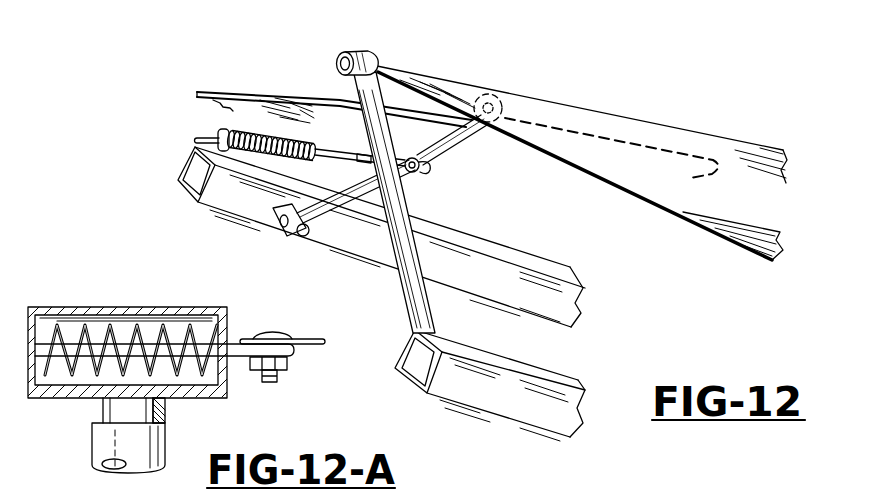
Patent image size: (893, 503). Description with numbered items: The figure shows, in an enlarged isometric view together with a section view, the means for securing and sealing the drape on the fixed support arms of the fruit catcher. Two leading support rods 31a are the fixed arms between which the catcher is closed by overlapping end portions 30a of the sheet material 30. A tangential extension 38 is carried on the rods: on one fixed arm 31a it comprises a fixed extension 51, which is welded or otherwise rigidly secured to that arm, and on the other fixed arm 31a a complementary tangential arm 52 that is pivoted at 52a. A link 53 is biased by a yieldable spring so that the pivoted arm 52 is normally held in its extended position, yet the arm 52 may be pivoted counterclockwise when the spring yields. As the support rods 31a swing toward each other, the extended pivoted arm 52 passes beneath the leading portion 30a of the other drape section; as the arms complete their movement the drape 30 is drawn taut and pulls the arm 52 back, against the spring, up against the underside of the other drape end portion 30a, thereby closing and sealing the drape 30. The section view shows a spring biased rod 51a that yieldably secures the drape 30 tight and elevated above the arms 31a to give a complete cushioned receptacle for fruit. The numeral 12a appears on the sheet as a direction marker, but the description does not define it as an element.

In FIG. 12, the pivot boss / direction of movement 12a is at (272, 39).
In FIG. 12A, the sheet material 30 is at (315, 347).
In FIG. 12, the overlapping portions 30a is at (233, 90).
In FIG. 12, the leading support rods 31a is at (587, 292).
In FIG. 12, the tangential extension 38 is at (428, 197).
In FIG. 12, the fixed extension 51 is at (402, 302).
In FIG. 12A, the fixed extension 51 is at (165, 438).
In FIG. 12A, the spring biased rod 51a is at (125, 345).
In FIG. 12, the tangential arm 52 is at (333, 220).
In FIG. 12, the pivot 52a is at (285, 232).
In FIG. 12, the link 53 is at (342, 150).